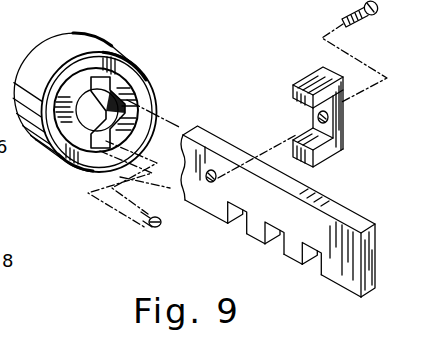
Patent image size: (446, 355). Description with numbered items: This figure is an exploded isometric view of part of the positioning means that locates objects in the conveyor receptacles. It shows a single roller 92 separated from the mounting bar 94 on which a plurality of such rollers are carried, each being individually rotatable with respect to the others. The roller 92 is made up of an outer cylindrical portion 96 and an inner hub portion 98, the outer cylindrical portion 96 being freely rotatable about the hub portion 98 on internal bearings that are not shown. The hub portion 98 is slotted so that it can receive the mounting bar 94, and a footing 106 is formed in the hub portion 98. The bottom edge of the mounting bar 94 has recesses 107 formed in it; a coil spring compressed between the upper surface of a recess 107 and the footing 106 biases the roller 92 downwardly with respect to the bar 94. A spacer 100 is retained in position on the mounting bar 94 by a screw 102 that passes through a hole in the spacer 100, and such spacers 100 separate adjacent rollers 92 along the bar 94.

The roller 92 is at (88, 33).
The mounting bar 94 is at (353, 285).
The outer cylindrical portion 96 is at (134, 104).
The inner hub portion 98 is at (128, 109).
The spacer 100 is at (326, 162).
The screw 102 is at (343, 21).
The footing 106 is at (96, 160).
The recess 107 is at (312, 278).